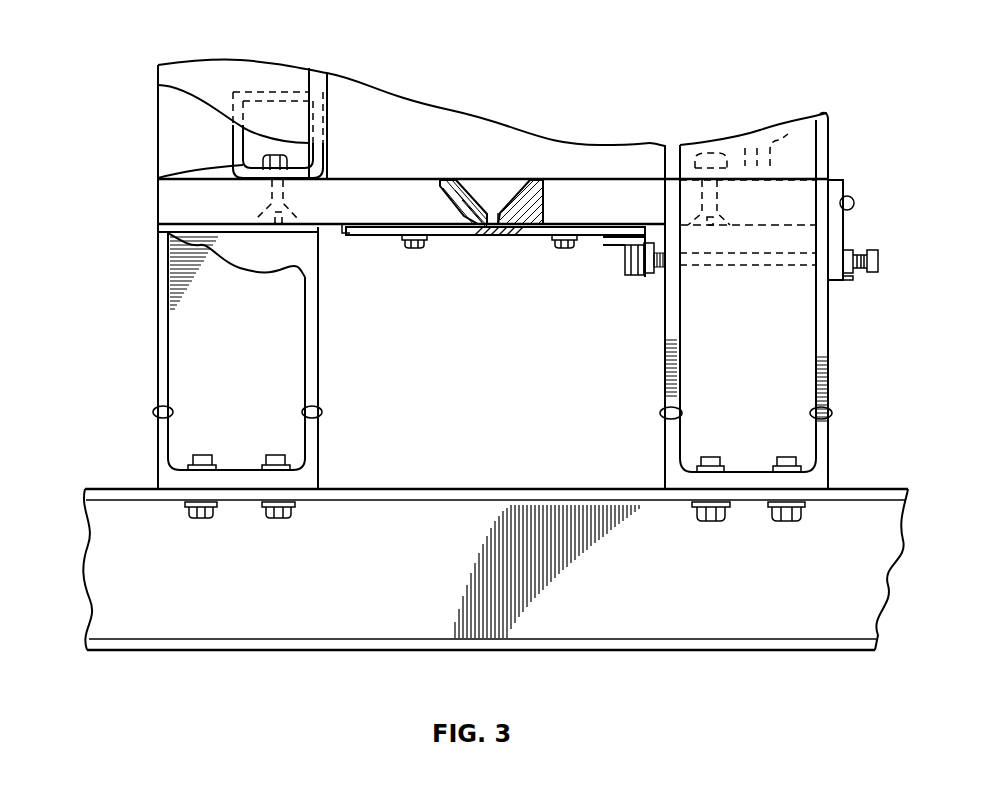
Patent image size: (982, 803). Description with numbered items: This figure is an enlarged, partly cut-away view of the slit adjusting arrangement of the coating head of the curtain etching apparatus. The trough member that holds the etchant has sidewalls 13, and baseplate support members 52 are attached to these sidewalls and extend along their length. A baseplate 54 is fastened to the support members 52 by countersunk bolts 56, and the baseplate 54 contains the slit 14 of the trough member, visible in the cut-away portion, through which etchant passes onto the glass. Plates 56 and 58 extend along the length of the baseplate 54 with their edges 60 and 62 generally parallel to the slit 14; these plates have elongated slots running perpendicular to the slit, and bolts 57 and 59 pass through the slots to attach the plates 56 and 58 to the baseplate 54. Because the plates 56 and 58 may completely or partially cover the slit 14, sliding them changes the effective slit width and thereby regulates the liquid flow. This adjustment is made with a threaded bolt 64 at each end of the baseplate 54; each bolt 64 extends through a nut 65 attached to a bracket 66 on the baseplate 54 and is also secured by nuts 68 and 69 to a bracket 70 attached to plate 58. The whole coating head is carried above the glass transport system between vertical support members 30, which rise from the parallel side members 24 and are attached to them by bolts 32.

The sidewall 13 is at (324, 72).
The slit 14 is at (492, 213).
The side member 24 is at (175, 623).
The support member 30 is at (158, 359).
The bolt 32 is at (167, 450).
The baseplate support member 52 is at (232, 148).
The baseplate 54 is at (172, 211).
The plate 56 is at (158, 178).
The bolt 57 is at (415, 248).
The plate 58 is at (605, 240).
The bolt 59 is at (565, 248).
The edge 60 is at (490, 228).
The edge 62 is at (495, 228).
The threaded bolt 64 is at (857, 252).
The nut 65 is at (850, 280).
The bracket 66 is at (840, 182).
The nut 68 is at (633, 275).
The nut 69 is at (657, 275).
The bracket 70 is at (642, 275).